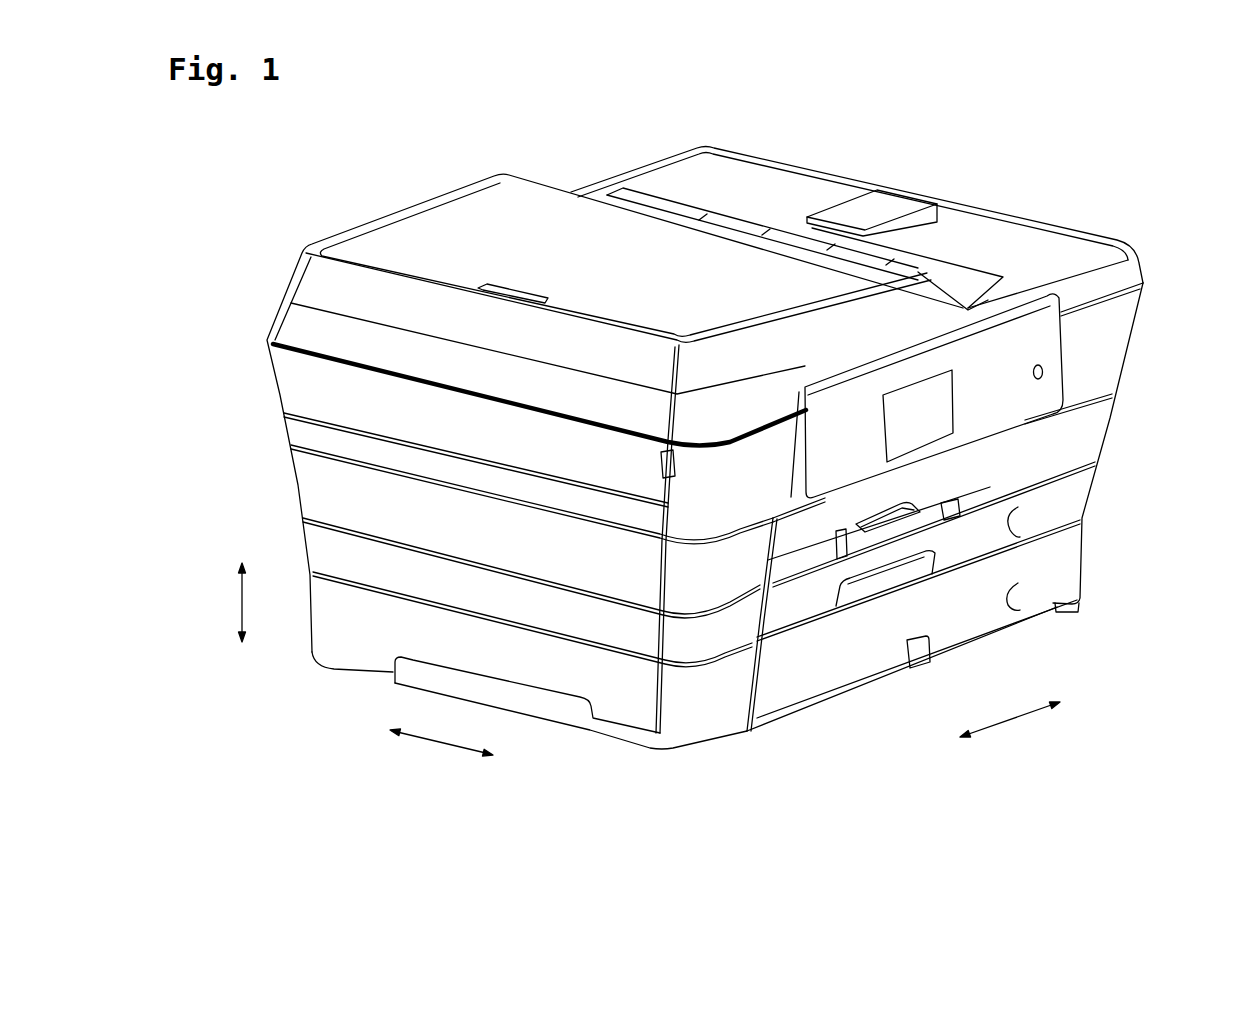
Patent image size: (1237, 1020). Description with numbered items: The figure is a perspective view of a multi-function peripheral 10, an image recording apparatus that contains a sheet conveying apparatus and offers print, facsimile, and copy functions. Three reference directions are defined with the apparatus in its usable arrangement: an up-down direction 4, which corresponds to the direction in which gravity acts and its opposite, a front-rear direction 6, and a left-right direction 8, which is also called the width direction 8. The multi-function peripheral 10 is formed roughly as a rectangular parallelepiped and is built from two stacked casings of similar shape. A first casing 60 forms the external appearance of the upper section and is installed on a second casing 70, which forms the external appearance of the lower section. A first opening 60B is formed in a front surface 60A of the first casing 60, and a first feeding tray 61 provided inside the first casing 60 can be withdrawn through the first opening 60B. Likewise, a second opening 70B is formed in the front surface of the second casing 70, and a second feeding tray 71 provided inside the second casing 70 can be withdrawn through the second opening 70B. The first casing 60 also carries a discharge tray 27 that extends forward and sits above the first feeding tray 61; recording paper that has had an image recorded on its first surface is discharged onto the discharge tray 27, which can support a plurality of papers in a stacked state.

The multi-function peripheral 10 is at (387, 156).
The up-down direction 4 is at (240, 598).
The front-rear direction 6 is at (443, 746).
The left-right direction 8 is at (1013, 720).
The discharge tray 27 is at (943, 482).
The first casing 60 is at (1097, 495).
The front surface 60A is at (1070, 450).
The first opening 60B is at (1005, 548).
The first feeding tray 61 is at (803, 607).
The second casing 70 is at (1092, 571).
The second opening 70B is at (1078, 606).
The second feeding tray 71 is at (793, 678).